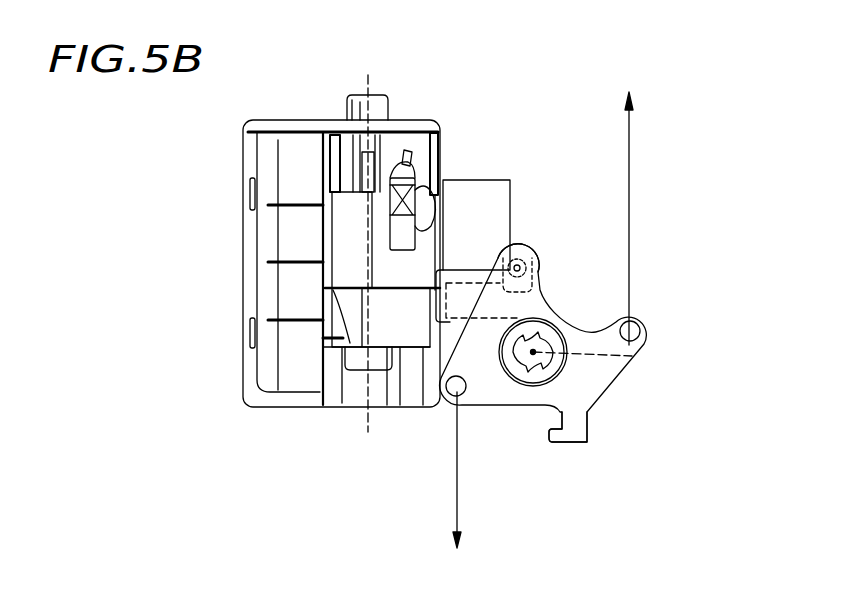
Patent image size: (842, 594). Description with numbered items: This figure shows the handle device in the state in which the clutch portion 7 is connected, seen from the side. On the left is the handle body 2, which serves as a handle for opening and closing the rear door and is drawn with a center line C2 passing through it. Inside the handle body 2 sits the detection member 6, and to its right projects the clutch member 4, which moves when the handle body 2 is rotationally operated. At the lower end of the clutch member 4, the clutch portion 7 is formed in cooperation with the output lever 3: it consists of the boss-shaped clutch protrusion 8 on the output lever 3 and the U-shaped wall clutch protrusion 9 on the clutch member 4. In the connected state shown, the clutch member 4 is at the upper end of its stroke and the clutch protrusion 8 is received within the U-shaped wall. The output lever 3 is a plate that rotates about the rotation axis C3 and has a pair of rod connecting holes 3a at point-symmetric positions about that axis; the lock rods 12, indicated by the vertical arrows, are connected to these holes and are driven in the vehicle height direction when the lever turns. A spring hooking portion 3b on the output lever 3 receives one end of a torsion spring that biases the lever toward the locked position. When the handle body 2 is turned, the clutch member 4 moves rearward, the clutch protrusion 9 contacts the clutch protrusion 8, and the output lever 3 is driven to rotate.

The handle body 2 is at (243, 290).
The output lever 3 is at (604, 370).
The rod connecting holes 3a is at (638, 324).
The spring hooking portion 3b is at (572, 442).
The clutch member 4 is at (482, 198).
The detection member 6 is at (407, 155).
The clutch portion 7 is at (530, 241).
The clutch protrusion 8 is at (540, 260).
The clutch protrusion 9 is at (535, 253).
The lock rods 12 is at (632, 128).
The center axis C2 is at (366, 72).
The rotation axis C3 is at (632, 356).